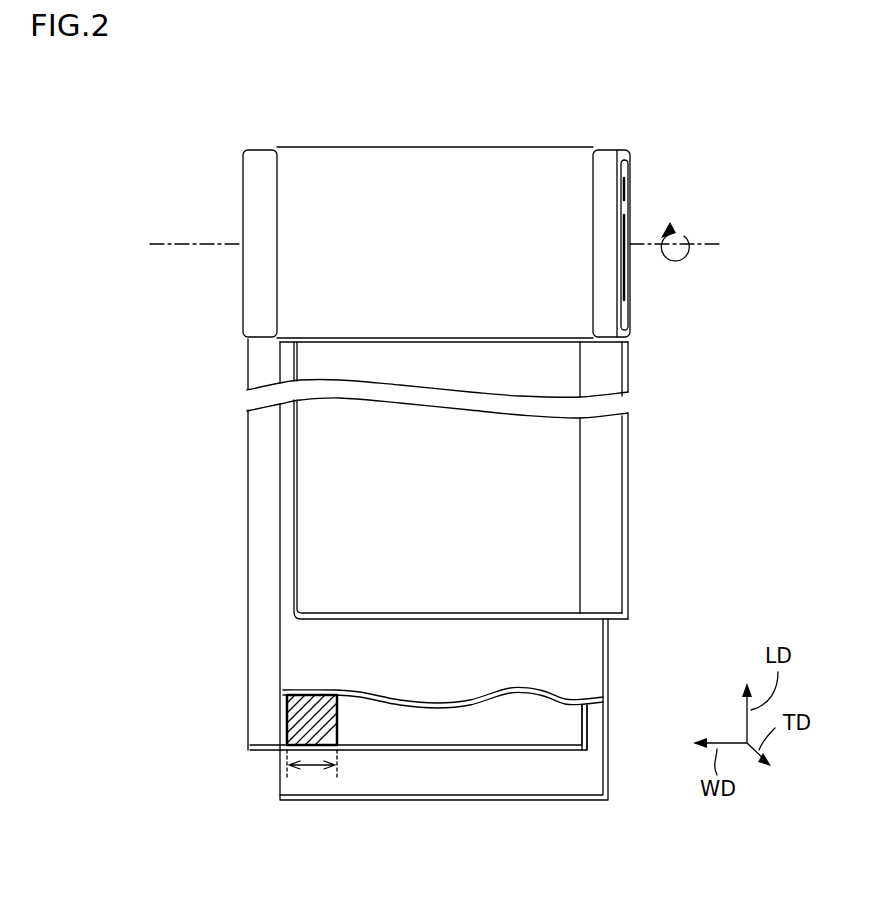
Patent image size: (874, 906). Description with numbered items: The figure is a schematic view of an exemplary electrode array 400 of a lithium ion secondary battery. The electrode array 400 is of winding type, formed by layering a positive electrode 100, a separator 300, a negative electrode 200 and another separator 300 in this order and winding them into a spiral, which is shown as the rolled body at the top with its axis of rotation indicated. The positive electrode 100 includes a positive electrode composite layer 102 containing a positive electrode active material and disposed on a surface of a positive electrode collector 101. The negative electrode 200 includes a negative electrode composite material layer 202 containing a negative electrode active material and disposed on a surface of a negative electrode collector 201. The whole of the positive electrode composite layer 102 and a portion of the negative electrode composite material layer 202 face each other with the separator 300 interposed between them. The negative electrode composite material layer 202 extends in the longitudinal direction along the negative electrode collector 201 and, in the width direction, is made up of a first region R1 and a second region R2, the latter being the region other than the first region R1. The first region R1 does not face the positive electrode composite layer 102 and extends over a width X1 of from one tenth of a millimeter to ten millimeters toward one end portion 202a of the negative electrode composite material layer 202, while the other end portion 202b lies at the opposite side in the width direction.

The electrode array 400 is at (220, 99).
The positive electrode 100 is at (530, 480).
The positive electrode collector 101 is at (611, 494).
The positive electrode composite layer 102 is at (565, 449).
The negative electrode 200 is at (374, 567).
The negative electrode collector 201 is at (263, 547).
The negative electrode composite material layer 202 is at (401, 727).
The one end portion of negative electrode composite material layer 202a is at (249, 734).
The other end portion of negative electrode composite material layer 202b is at (587, 727).
The separator 300 is at (608, 655).
The first region R1 is at (312, 718).
The second region R2 is at (366, 709).
The width of first region X1 is at (312, 772).